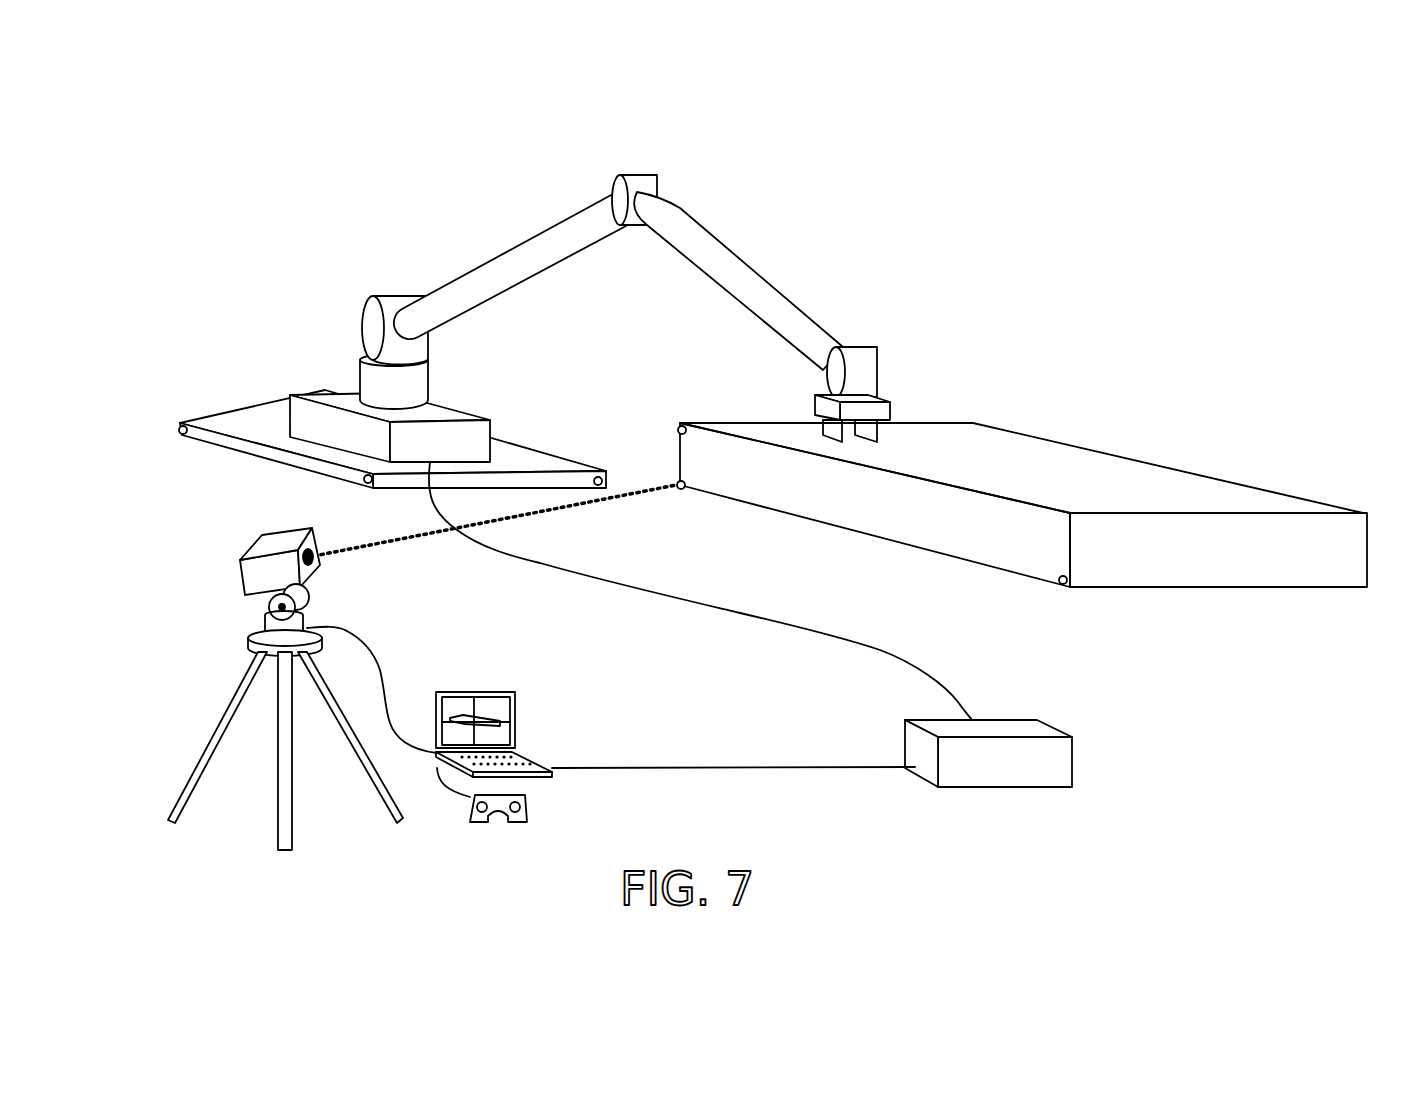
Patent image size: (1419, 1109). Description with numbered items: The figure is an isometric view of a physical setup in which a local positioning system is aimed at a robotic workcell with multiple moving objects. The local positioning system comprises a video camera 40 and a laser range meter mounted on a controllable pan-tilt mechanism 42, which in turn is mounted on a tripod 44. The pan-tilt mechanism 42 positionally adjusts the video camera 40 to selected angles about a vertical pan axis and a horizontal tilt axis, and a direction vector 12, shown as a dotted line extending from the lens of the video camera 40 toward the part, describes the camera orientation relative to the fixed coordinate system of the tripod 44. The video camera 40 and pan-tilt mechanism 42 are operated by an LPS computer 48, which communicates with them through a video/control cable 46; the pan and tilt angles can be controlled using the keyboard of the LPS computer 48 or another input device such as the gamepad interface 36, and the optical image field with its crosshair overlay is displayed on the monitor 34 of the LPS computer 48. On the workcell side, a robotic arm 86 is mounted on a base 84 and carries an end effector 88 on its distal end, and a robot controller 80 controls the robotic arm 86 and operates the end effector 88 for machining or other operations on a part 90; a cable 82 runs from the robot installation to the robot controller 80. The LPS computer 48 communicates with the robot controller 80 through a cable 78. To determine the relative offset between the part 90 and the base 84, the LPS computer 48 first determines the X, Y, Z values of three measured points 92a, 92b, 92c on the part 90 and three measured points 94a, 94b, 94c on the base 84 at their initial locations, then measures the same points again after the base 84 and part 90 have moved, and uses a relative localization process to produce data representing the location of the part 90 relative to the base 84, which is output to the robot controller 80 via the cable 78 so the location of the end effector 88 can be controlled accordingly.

The direction vector 12 is at (598, 502).
The monitor 34 is at (482, 692).
The gamepad interface 36 is at (528, 808).
The video camera 40 is at (247, 548).
The pan-tilt mechanism 42 is at (307, 598).
The tripod 44 is at (225, 718).
The video/control cable 46 is at (382, 670).
The LPS computer 48 is at (527, 757).
The cable 78 is at (748, 765).
The robot controller 80 is at (1050, 722).
The cable 82 is at (703, 602).
The base 84 is at (517, 445).
The robotic arm 86 is at (712, 213).
The end effector 88 is at (892, 407).
The part 90 is at (1077, 450).
The measured point 92a is at (1060, 588).
The measured point 92b is at (684, 490).
The measured point 92c is at (684, 424).
The measured point 94a is at (178, 437).
The measured point 94b is at (370, 488).
The measured point 94c is at (605, 475).